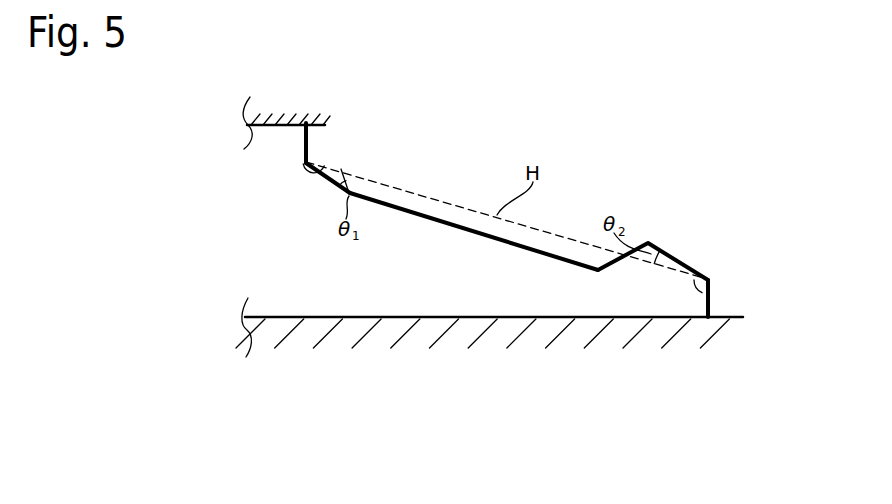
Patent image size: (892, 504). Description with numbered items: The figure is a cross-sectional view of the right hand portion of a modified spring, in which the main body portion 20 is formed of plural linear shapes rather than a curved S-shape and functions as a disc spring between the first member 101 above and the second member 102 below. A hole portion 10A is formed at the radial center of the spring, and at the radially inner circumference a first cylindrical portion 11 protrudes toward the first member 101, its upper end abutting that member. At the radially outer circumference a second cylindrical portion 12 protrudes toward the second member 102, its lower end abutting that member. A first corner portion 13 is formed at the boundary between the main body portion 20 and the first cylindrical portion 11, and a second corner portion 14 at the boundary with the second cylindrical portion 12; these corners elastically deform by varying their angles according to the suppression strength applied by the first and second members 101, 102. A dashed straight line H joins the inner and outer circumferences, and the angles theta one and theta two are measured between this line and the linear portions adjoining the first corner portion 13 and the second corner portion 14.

The hole portion 10A is at (265, 158).
The first member 101 is at (297, 116).
The second member 102 is at (342, 340).
The first cylindrical portion 11 is at (309, 141).
The first corner portion 13 is at (330, 173).
The main body portion 20 is at (433, 215).
The second corner portion 14 is at (688, 263).
The second cylindrical portion 12 is at (713, 301).